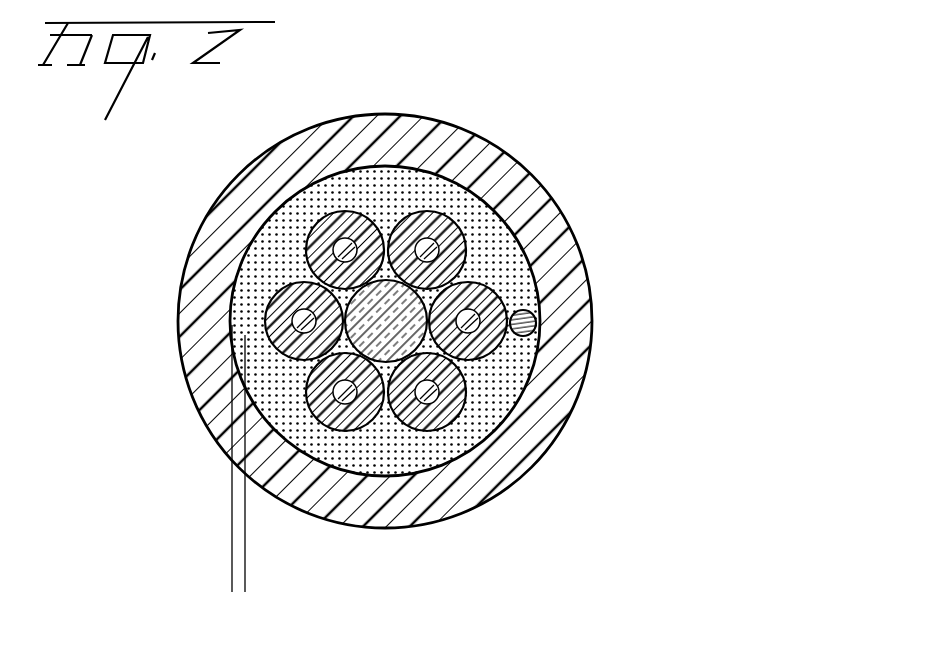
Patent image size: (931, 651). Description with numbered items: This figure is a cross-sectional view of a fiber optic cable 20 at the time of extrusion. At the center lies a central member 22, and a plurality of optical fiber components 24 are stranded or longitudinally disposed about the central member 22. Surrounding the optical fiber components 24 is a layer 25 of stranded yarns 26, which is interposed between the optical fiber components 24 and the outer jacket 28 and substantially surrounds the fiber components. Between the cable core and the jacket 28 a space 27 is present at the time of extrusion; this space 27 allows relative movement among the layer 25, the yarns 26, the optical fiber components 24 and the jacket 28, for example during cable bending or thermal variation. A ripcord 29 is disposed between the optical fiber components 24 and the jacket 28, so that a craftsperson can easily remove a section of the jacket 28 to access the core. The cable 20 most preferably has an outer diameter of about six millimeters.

The fiber optic cable 20 is at (733, 51).
The central member 22 is at (468, 402).
The optical fiber components 24 is at (413, 321).
The layer of stranded yarns 25 is at (309, 229).
The stranded yarns 26 is at (516, 254).
The space 27 is at (175, 577).
The jacket 28 is at (449, 139).
The ripcord 29 is at (537, 323).